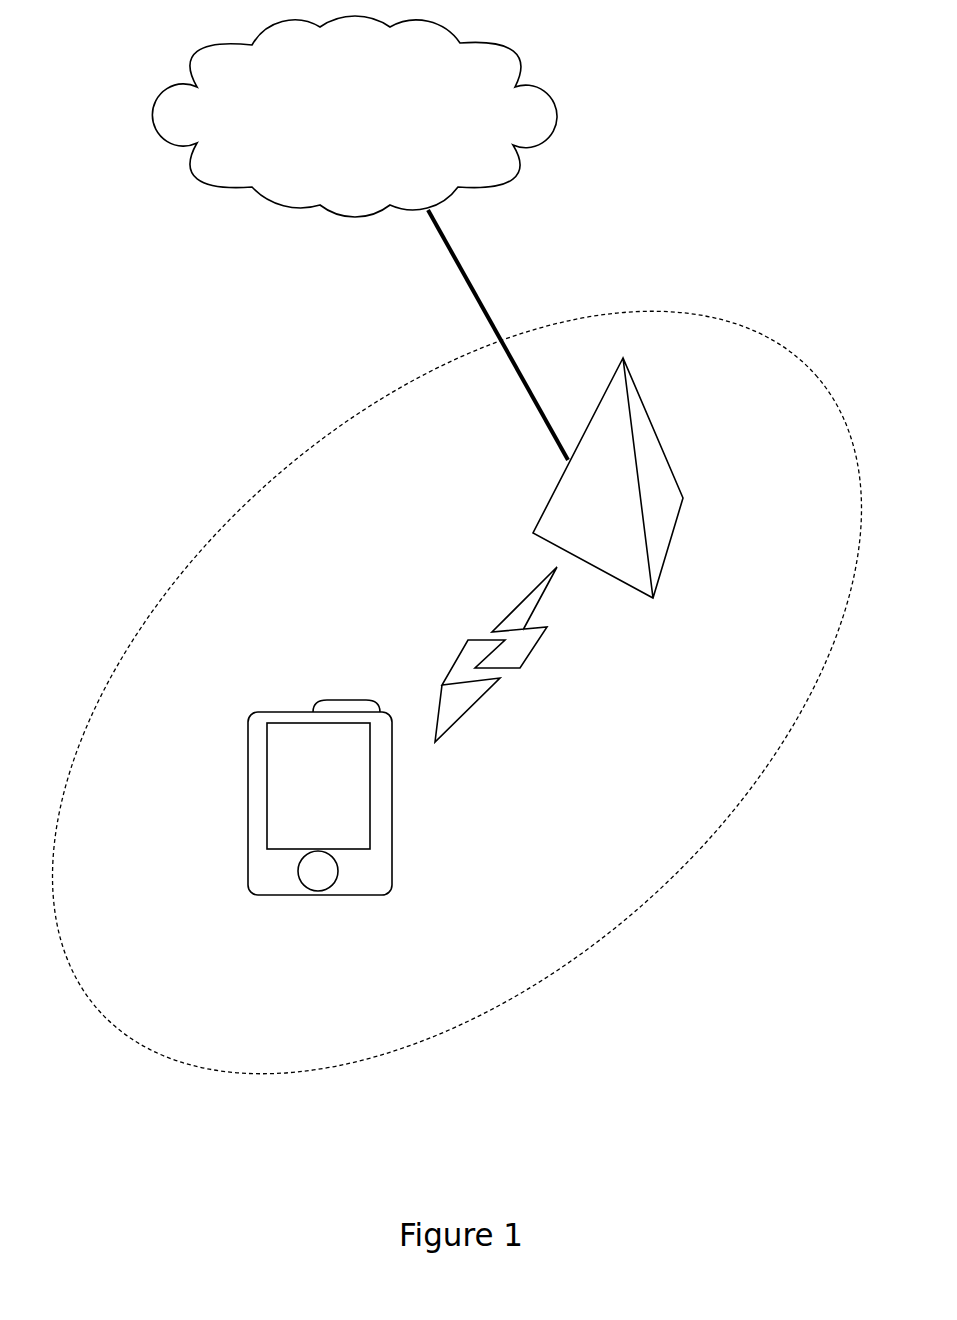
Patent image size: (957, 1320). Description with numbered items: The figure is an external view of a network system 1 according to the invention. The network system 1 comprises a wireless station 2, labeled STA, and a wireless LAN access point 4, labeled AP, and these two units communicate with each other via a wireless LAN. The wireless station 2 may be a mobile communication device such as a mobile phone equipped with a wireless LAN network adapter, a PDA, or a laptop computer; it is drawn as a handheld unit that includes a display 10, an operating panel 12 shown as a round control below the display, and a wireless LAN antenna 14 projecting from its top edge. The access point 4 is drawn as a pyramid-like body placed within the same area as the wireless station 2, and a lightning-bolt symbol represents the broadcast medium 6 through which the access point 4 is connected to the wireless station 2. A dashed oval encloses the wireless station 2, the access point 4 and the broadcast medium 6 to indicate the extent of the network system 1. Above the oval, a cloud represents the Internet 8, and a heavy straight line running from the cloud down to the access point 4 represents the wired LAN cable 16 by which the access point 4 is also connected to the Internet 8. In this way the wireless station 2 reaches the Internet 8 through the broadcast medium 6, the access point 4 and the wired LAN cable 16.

The network system 1 is at (250, 502).
The wireless station (STA) 2 is at (248, 697).
The wireless LAN access point (AP) 4 is at (663, 425).
The broadcast medium 6 is at (543, 664).
The Internet 8 is at (518, 50).
The display 10 is at (300, 812).
The operating panel 12 is at (311, 876).
The wireless LAN antenna 14 is at (355, 696).
The wired LAN cable 16 is at (445, 250).